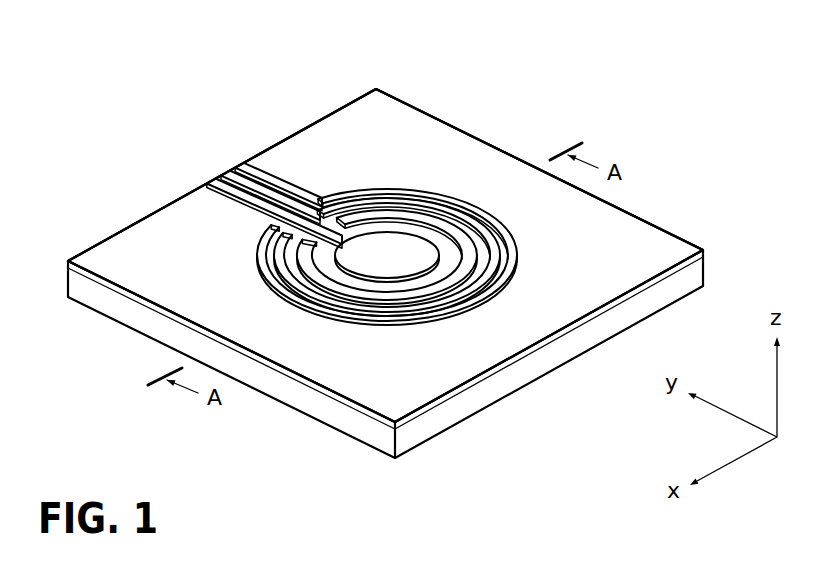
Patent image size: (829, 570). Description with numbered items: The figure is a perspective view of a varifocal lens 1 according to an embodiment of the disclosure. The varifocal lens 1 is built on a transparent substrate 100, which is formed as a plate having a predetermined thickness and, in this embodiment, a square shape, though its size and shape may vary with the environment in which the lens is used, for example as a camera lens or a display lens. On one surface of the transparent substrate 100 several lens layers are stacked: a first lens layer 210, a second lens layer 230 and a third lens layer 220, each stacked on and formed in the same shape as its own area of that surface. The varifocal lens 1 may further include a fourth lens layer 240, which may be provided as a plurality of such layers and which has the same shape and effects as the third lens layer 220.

The varifocal lens 1 is at (197, 84).
The transparent substrate 100 is at (493, 390).
The first lens layer 210 is at (385, 250).
The third lens layer 220 is at (452, 228).
The second lens layer 230 is at (630, 242).
The fourth lens layer 240 is at (348, 200).